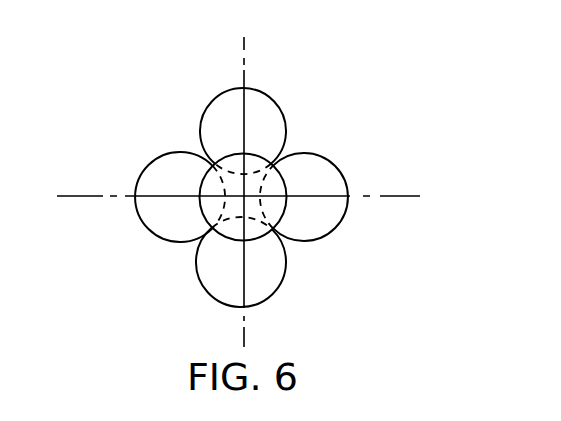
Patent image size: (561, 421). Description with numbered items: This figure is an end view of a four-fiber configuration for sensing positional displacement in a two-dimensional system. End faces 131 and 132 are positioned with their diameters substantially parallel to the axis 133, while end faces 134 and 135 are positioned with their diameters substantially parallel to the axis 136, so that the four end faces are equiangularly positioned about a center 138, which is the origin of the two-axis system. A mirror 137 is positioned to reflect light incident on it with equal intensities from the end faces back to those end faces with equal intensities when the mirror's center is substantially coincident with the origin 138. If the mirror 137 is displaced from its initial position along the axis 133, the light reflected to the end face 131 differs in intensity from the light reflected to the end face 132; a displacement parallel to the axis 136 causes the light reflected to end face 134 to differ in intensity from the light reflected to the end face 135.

The end face 131 is at (278, 100).
The end face 132 is at (283, 272).
The axis 133 is at (245, 50).
The end face 134 is at (163, 152).
The end face 135 is at (338, 172).
The axis 136 is at (407, 197).
The mirror 137 is at (200, 210).
The center 138 is at (242, 197).